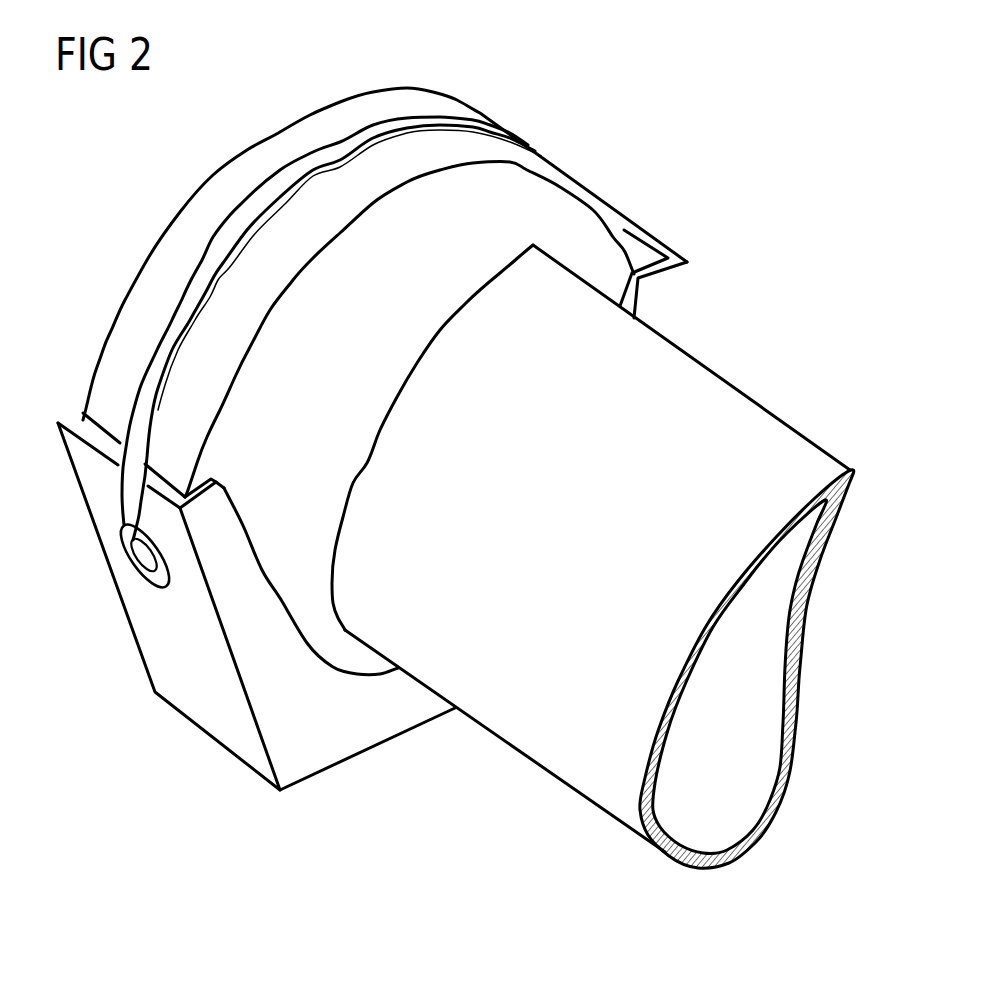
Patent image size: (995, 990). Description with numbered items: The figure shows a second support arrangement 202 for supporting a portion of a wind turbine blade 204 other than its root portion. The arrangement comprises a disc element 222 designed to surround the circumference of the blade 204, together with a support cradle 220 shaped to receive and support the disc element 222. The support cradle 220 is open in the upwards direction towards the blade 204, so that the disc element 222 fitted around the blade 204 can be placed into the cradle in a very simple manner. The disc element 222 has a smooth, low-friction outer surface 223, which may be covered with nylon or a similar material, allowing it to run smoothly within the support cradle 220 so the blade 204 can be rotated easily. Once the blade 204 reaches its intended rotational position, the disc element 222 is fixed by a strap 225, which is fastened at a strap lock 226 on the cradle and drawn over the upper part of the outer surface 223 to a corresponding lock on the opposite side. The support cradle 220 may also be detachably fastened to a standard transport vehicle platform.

The second support arrangement 202 is at (772, 152).
The wind turbine blade 204 is at (580, 784).
The support cradle 220 is at (318, 761).
The disc element 222 is at (582, 203).
The outer surface 223 is at (137, 300).
The strap 225 is at (225, 250).
The strap lock 226 is at (147, 557).